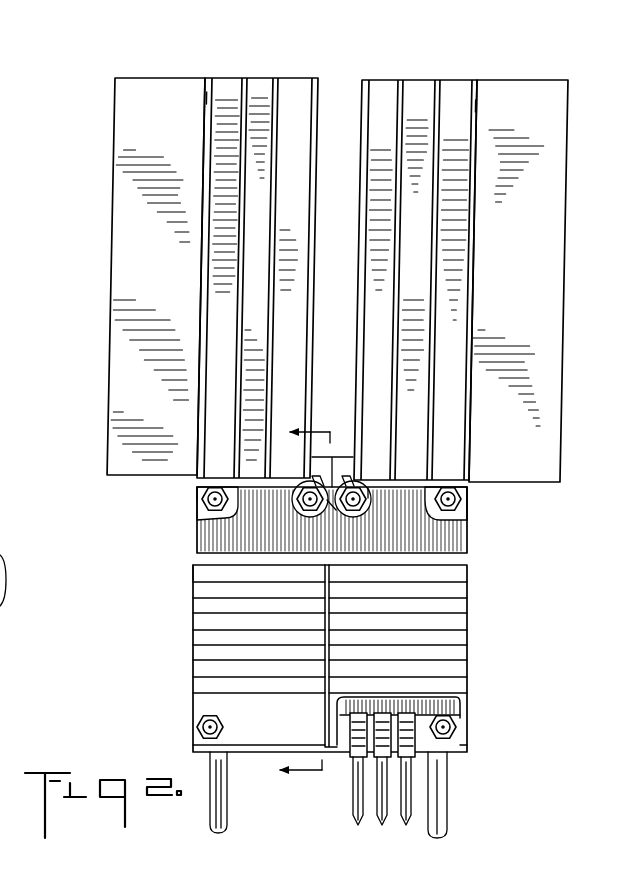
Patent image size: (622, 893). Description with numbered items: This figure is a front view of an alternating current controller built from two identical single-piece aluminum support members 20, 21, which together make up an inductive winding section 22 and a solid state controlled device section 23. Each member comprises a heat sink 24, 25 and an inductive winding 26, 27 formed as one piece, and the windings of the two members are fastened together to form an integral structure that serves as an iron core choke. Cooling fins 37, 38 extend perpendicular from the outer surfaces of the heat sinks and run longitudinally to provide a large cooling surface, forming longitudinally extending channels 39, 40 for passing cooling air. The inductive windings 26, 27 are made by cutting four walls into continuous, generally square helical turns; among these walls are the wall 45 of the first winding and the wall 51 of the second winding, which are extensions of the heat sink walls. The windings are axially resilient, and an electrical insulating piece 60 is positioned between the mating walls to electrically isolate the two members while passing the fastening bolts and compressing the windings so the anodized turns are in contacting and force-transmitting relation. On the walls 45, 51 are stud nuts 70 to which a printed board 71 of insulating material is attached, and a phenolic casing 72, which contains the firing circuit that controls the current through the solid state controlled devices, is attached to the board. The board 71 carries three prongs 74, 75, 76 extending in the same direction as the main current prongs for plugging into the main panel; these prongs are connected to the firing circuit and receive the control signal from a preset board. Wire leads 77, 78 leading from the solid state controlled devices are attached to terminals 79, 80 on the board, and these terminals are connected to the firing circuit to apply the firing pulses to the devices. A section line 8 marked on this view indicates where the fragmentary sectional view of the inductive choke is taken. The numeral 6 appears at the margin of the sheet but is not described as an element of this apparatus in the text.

The stray numeral 6 is at (6, 149).
The section line 8— 8 is at (316, 604).
The support member 20 is at (269, 30).
The support member 21 is at (491, 37).
The inductive winding section 22 is at (160, 611).
The solid state controlled device section 23 is at (85, 283).
The heat sink 24 is at (206, 98).
The heat sink 25 is at (479, 106).
The inductive winding 26 is at (206, 659).
The inductive winding 27 is at (455, 638).
The cooling fins 37 is at (112, 215).
The cooling fins 38 is at (567, 185).
The longitudinally extending channel 39 is at (214, 452).
The longitudinally extending channel 40 is at (460, 470).
The wall 45 is at (166, 481).
The wall 51 is at (516, 506).
The electrical insulating piece 60 is at (322, 722).
The stud nuts 70 is at (200, 500).
The printed board 71 is at (196, 546).
The phenolic casing 72 is at (0, 660).
The prong 74 is at (357, 826).
The prong 75 is at (383, 826).
The prong 76 is at (407, 826).
The wire lead 77 is at (329, 508).
The wire lead 78 is at (347, 511).
The terminal 79 is at (299, 506).
The terminal 80 is at (366, 498).